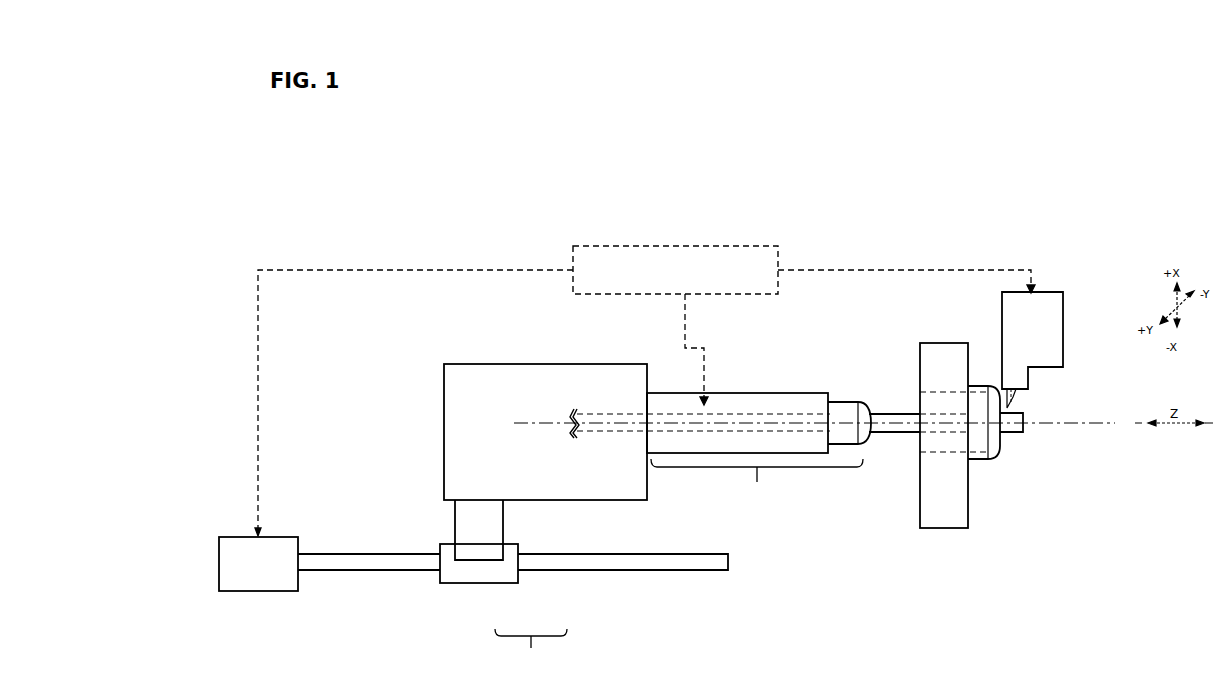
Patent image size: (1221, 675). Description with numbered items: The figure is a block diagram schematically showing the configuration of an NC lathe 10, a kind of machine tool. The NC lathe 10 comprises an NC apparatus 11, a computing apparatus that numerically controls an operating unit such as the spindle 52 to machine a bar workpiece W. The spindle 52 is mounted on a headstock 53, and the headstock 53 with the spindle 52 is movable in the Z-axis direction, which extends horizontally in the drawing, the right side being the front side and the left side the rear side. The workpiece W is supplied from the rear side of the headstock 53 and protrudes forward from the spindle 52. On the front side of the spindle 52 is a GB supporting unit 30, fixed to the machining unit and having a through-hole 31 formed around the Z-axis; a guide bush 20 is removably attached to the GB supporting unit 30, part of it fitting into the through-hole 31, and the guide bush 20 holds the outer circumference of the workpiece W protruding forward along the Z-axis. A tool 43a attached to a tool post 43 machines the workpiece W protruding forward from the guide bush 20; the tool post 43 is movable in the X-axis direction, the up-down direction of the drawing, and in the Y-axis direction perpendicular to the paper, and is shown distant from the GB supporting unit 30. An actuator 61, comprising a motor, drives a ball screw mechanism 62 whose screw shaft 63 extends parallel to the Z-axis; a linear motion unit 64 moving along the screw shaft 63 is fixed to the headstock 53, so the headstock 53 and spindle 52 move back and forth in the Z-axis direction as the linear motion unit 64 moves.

The NC lathe 10 is at (729, 198).
The NC apparatus 11 is at (745, 244).
The guide bush 20 is at (975, 461).
The GB supporting unit 30 is at (935, 342).
The through-hole 31 is at (918, 450).
The tool post 43 is at (1048, 292).
The tool 43a is at (1017, 400).
The spindle 52 is at (759, 452).
The headstock 53 is at (511, 362).
The actuator 61 is at (275, 538).
The ball screw mechanism 62 is at (513, 586).
The screw shaft 63 is at (540, 563).
The linear motion unit 64 is at (500, 580).
The workpiece W is at (1018, 435).